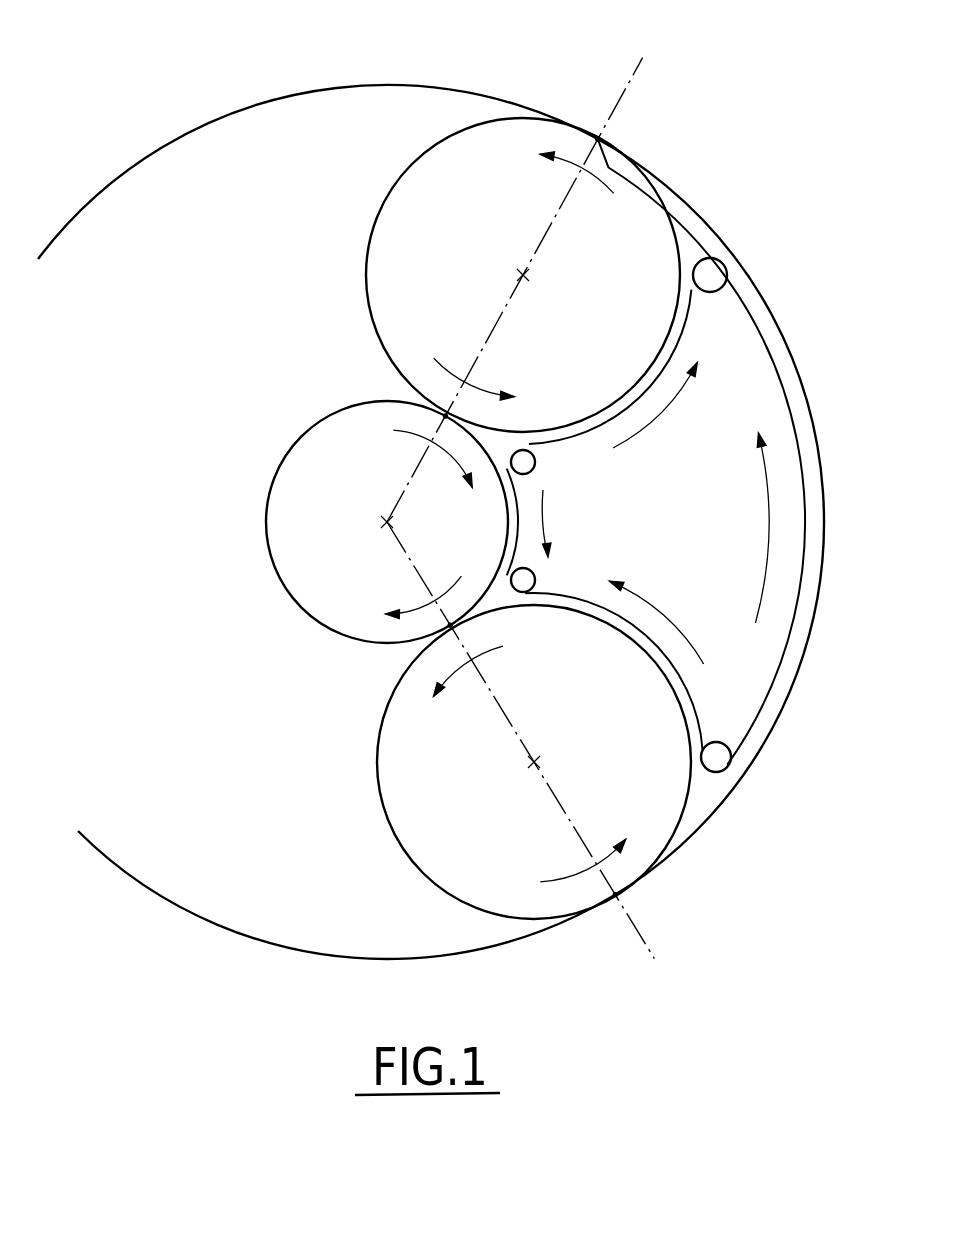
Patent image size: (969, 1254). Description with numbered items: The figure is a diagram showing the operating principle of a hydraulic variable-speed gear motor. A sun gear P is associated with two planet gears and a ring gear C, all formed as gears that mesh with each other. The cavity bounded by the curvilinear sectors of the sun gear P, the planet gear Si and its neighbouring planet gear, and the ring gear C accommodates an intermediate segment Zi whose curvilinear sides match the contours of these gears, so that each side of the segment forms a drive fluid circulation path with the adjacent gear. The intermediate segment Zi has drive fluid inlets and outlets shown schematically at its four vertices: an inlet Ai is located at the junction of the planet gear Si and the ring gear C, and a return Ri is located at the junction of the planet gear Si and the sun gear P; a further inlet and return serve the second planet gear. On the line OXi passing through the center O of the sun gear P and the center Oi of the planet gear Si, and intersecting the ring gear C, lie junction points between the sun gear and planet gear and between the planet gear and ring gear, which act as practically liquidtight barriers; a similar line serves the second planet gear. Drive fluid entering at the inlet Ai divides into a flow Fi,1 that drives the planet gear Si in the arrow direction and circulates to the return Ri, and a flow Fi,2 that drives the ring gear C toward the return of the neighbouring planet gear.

The ring gear C is at (468, 88).
The line OXi Xi is at (530, 759).
The sun gear P is at (387, 522).
The center of sun gear P O is at (379, 525).
The planet gear Si is at (534, 762).
The center of planet gear Si Oi is at (550, 762).
The intermediate segment Zi is at (656, 452).
The return Ri is at (535, 581).
The inlet Ai is at (731, 766).
The flow Fi,1 is at (656, 622).
The flow Fi,2 is at (748, 528).